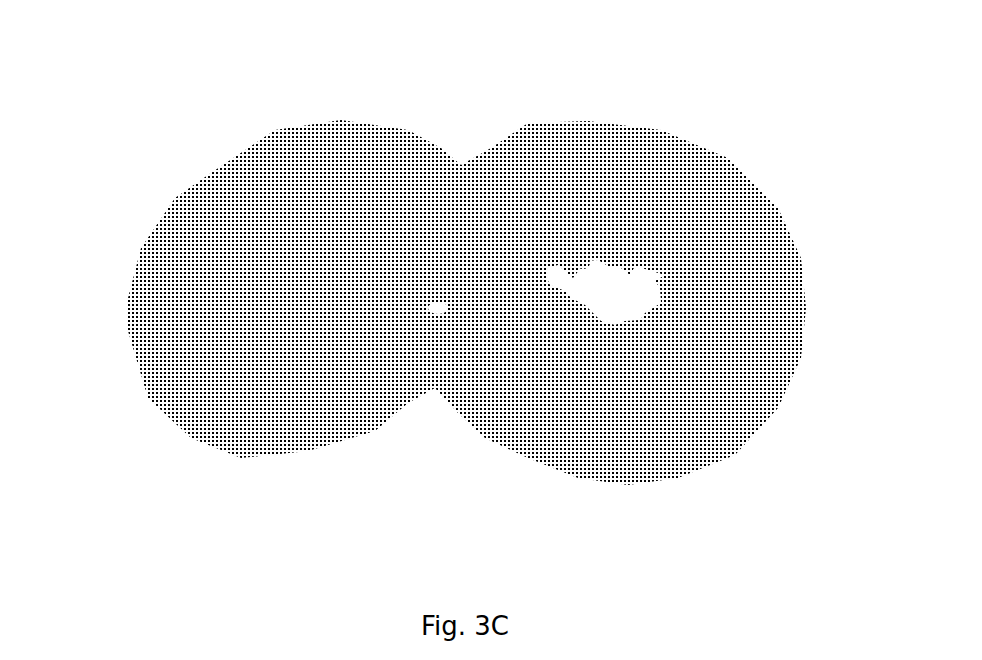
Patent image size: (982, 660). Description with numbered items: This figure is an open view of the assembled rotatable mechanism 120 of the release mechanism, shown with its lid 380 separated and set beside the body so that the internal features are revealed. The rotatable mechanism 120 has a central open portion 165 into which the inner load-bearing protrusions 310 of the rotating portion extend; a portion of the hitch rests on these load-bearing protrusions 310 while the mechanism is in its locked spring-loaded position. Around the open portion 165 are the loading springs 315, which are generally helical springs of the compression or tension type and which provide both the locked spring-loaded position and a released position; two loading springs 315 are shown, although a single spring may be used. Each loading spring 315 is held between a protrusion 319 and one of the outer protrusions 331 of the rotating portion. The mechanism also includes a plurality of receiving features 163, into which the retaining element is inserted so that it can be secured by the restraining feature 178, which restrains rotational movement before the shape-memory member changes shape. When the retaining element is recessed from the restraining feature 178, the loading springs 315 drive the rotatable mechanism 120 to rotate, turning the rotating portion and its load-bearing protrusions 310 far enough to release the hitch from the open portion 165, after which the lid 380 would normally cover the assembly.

The rotatable mechanism 120 is at (467, 335).
The receiving features 163 is at (382, 116).
The lid 380 is at (119, 232).
The load-bearing protrusions 310 is at (590, 180).
The outer protrusions 331 is at (703, 121).
The loading springs 315 is at (786, 195).
The protrusions 319 is at (808, 350).
The open portion 165 is at (729, 386).
The restraining feature 178 is at (568, 478).